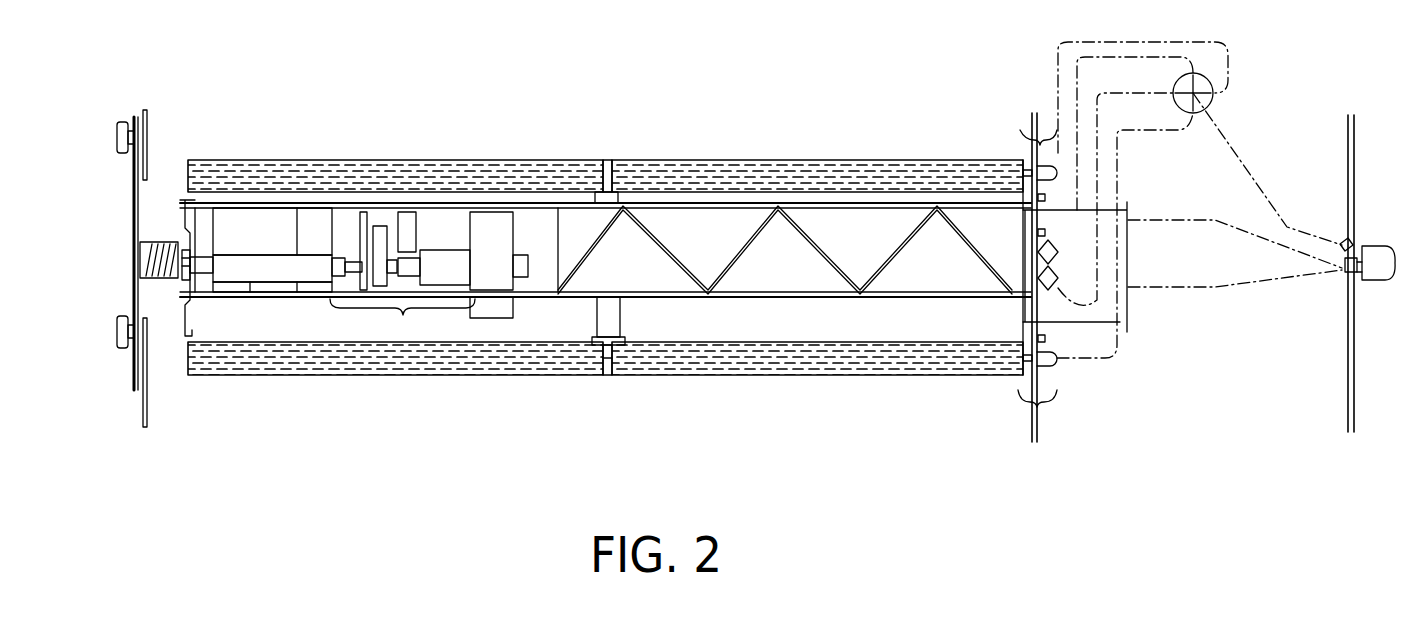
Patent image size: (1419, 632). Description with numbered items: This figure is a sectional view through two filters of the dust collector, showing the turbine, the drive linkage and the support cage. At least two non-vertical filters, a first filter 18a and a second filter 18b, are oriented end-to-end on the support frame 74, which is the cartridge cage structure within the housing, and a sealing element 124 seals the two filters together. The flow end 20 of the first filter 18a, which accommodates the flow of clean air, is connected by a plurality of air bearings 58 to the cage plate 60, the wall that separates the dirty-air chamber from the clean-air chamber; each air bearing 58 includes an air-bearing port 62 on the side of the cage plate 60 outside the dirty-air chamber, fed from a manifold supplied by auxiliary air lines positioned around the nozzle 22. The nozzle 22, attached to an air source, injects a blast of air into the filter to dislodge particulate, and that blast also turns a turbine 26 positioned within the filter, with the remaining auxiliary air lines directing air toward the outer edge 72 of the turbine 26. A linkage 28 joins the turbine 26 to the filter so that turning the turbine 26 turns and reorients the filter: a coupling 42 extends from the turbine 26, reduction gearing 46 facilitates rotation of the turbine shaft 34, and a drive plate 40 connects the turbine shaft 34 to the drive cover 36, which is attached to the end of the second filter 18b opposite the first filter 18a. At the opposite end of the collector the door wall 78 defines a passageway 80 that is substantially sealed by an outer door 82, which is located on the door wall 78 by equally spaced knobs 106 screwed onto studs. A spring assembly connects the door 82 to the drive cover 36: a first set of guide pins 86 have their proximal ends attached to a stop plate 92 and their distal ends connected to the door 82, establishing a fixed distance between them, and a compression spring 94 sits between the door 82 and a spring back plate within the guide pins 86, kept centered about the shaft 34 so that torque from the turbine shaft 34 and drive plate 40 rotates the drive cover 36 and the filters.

The first filter 18a is at (770, 368).
The second filter 18b is at (333, 373).
The flow end of the filter 20 is at (1020, 158).
The nozzle 22 is at (1353, 256).
The turbine 26 is at (487, 312).
The linkage 28 is at (402, 319).
The turbine shaft 34 is at (361, 207).
The drive cover 36 is at (182, 326).
The drive plate 40 is at (193, 258).
The coupling 42 is at (467, 207).
The reduction gearing 46 is at (391, 207).
The air bearings 58 is at (1040, 128).
The cage plate 60 is at (1040, 428).
The air-bearing port 62 is at (1052, 173).
The outer edge of the turbine 72 is at (518, 207).
The support frame 74 is at (733, 297).
The door wall 78 is at (146, 422).
The passageway 80 is at (157, 170).
The outer door 82 is at (133, 212).
The first set of guide pins 86 is at (139, 264).
The stop plate 92 is at (180, 292).
The compression spring 94 is at (165, 240).
The knobs 106 is at (117, 135).
The sealing element 124 is at (607, 165).